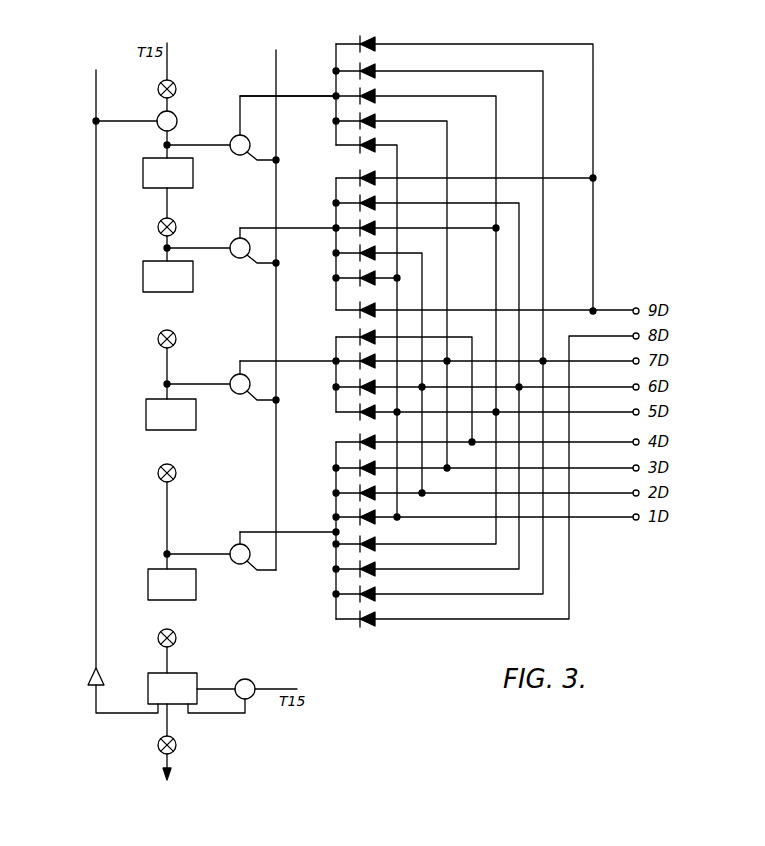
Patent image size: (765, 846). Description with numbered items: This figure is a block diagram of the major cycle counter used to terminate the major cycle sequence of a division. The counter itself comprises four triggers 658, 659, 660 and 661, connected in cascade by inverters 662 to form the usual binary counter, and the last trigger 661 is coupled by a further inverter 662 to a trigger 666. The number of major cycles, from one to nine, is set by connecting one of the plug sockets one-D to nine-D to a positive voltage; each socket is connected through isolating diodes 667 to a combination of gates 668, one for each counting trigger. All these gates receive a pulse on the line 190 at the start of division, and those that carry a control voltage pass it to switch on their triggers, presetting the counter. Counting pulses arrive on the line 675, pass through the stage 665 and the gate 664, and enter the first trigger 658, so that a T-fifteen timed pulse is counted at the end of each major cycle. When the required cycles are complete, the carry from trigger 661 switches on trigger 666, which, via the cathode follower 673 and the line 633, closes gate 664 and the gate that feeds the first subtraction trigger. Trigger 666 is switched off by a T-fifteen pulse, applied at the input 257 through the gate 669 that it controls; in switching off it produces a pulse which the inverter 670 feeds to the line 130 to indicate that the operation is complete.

The line 675 is at (167, 63).
The line 633 is at (96, 108).
The gate 665 is at (176, 89).
The gate 664 is at (177, 121).
The gates 668 is at (243, 137).
The trigger 658 is at (193, 176).
The inverters 662 is at (175, 222).
The trigger 659 is at (193, 279).
The trigger 660 is at (196, 420).
The trigger 661 is at (196, 594).
The trigger 666 is at (148, 684).
The cathode follower 673 is at (102, 676).
The gate 669 is at (246, 686).
The timing line 257 is at (280, 689).
The inverter 670 is at (176, 745).
The line 130 is at (164, 771).
The line 190 is at (276, 65).
The isolating diodes 667 is at (366, 34).